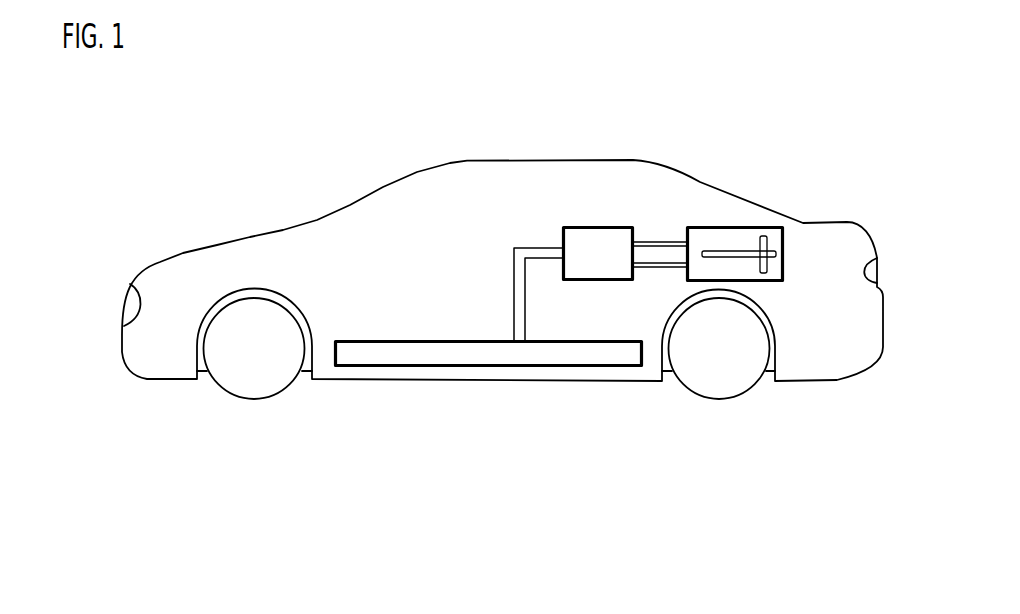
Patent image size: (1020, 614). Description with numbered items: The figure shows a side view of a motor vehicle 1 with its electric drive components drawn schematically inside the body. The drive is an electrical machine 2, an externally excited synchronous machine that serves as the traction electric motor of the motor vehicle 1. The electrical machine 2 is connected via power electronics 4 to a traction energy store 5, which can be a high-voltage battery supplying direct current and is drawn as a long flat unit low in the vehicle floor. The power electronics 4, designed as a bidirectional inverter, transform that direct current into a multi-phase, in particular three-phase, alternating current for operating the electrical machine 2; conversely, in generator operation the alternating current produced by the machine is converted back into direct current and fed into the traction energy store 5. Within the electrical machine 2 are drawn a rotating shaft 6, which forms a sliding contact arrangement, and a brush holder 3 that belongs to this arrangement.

The motor vehicle 1 is at (502, 252).
The electrical machine 2 is at (763, 203).
The brush holder 3 is at (765, 253).
The power electronics 4 is at (592, 247).
The traction energy store 5 is at (468, 352).
The rotating shaft 6 is at (727, 250).